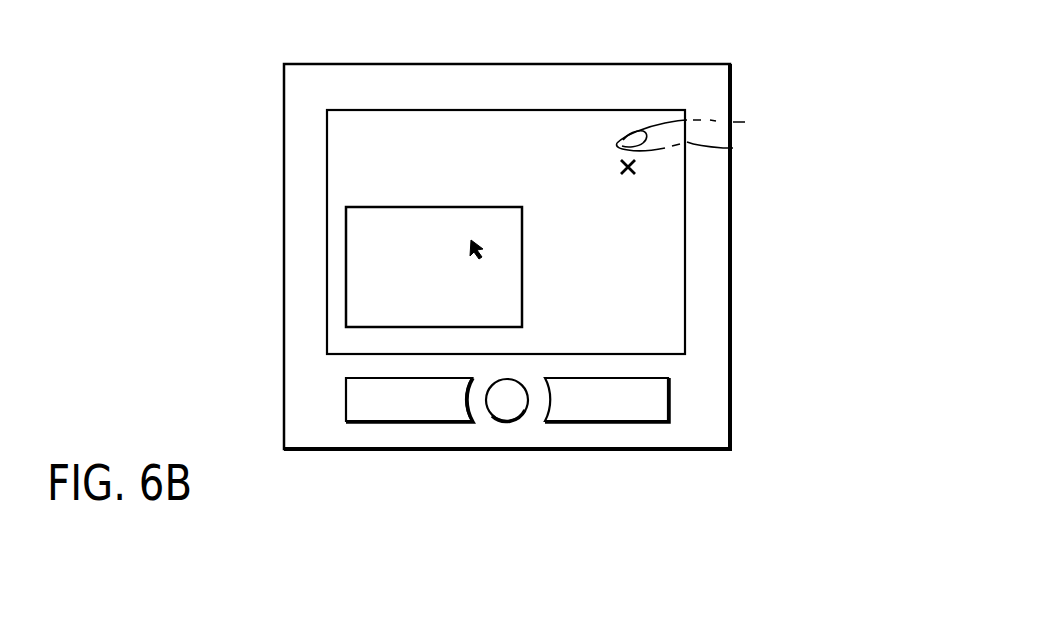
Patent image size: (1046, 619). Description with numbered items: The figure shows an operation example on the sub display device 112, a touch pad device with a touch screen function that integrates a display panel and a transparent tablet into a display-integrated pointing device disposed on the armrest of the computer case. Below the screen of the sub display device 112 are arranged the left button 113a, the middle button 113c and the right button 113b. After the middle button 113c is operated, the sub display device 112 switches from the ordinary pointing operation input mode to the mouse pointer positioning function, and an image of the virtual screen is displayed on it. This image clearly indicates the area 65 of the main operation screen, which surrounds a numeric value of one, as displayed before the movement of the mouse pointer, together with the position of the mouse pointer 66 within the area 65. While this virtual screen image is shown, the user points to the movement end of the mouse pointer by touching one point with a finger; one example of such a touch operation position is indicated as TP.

The sub display device 112 is at (615, 109).
The area 65 is at (387, 206).
The mouse pointer 66 is at (470, 236).
The touch operation position TP is at (627, 178).
The left button 113a is at (400, 425).
The right button 113b is at (630, 425).
The middle button 113c is at (507, 422).